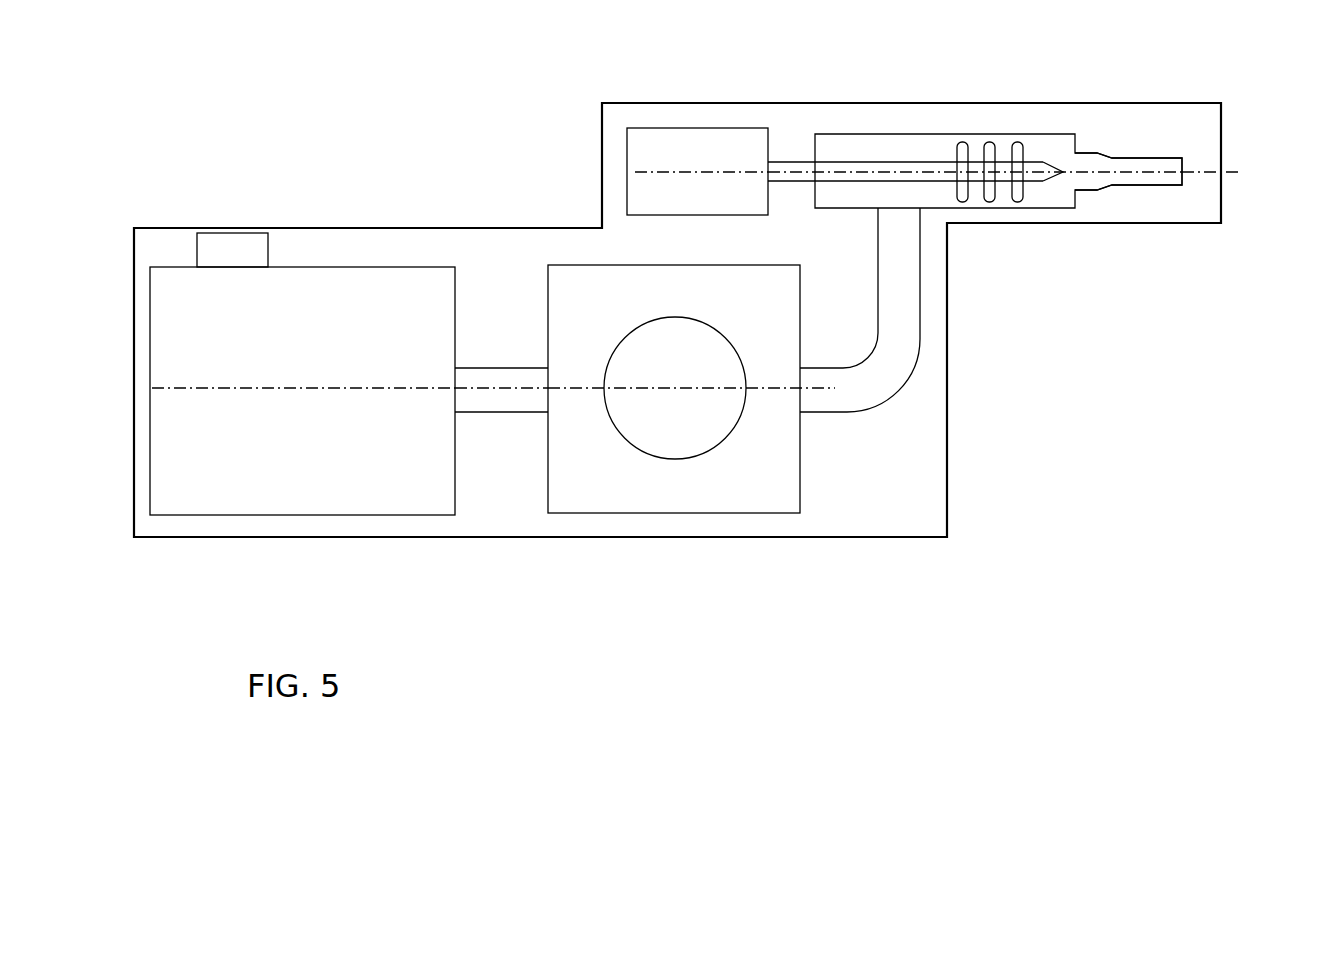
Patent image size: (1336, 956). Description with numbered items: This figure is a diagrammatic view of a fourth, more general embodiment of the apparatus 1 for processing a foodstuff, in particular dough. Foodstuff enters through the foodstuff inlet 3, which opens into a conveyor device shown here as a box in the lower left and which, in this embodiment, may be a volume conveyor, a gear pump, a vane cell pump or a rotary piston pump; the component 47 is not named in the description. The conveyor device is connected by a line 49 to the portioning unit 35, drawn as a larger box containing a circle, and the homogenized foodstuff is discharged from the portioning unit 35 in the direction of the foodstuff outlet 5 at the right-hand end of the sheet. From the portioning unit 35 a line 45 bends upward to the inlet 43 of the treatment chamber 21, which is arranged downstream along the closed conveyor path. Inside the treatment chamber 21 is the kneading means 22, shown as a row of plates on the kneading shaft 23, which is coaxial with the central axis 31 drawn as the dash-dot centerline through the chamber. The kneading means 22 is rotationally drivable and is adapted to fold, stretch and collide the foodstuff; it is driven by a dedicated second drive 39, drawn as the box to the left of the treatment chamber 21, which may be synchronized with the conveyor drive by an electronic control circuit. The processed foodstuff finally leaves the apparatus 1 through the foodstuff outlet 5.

The apparatus 1 is at (318, 110).
The foodstuff inlet 3 is at (226, 218).
The foodstuff outlet 5 is at (1218, 172).
The treatment chamber 21 is at (1046, 132).
The kneading means 22 is at (978, 135).
The kneading shaft 23 is at (835, 161).
The central axis 31 is at (867, 171).
The portioning unit 35 is at (770, 540).
The second drive 39 is at (686, 128).
The inlet 43 is at (943, 232).
The line 45 is at (893, 363).
The gas reservoir 47 is at (357, 540).
The line 49 is at (495, 413).